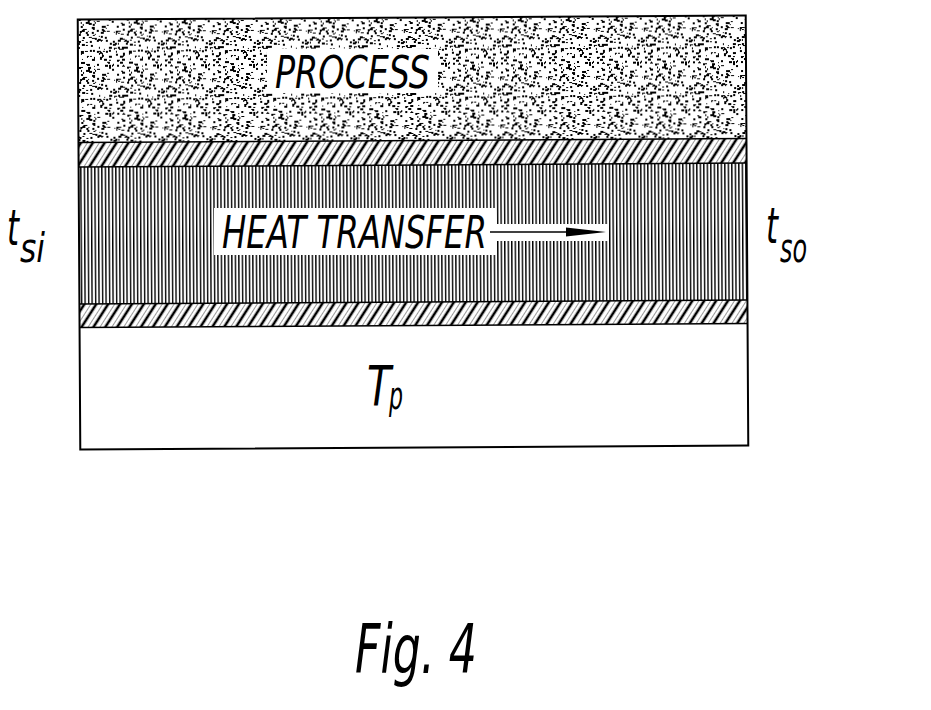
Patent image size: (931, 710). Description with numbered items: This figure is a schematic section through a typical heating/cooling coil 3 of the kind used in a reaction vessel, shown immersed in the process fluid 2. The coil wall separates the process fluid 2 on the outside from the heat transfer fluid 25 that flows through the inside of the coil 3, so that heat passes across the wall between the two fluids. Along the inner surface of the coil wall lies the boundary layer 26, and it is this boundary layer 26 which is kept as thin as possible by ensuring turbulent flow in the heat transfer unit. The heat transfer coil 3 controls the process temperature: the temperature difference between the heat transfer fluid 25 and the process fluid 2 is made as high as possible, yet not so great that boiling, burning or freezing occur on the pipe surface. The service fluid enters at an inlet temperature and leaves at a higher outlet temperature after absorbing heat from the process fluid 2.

The process fluid 2 is at (703, 83).
The heating/cooling coil 3 is at (730, 140).
The heat transfer fluid 25 is at (700, 265).
The boundary layer 26 is at (700, 193).